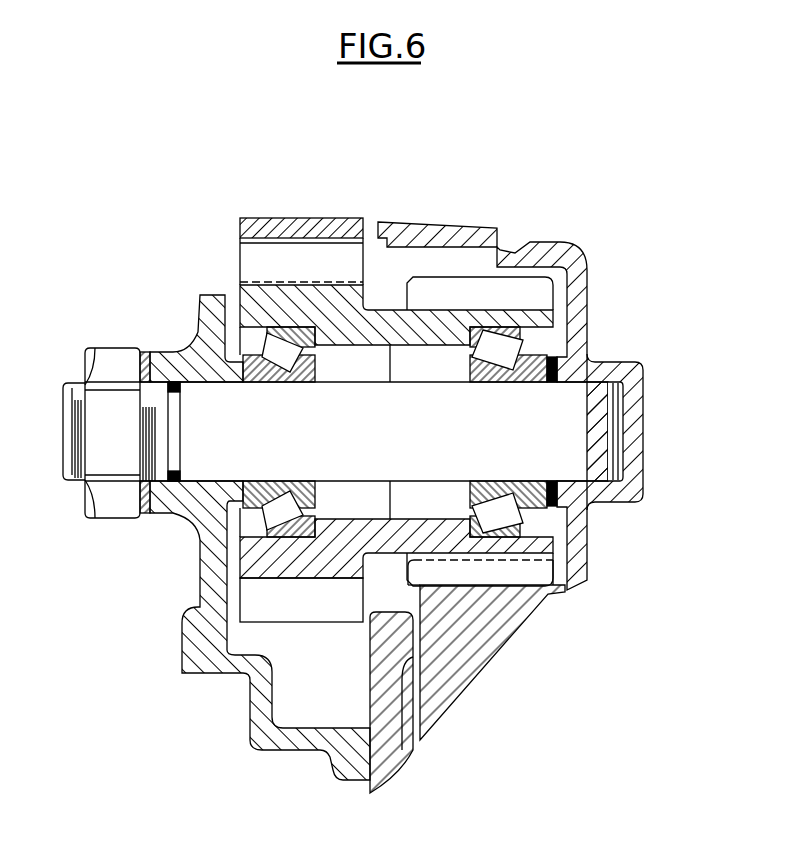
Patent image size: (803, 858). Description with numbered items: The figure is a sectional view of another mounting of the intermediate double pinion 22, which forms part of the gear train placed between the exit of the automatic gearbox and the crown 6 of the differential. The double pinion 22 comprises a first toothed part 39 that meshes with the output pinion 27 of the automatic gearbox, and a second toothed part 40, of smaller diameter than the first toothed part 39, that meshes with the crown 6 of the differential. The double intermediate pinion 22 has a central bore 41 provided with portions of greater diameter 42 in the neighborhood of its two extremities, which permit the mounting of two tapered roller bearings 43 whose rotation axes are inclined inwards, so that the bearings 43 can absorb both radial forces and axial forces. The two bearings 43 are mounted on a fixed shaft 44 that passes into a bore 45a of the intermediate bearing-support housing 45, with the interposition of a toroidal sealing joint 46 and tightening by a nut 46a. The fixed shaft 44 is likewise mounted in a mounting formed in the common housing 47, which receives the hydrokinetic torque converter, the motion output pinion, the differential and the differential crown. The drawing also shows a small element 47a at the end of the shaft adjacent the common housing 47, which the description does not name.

The crown 6 is at (497, 618).
The intermediate double pinion 22 is at (378, 328).
The output pinion 27 is at (302, 225).
The first toothed part 39 is at (262, 278).
The second toothed part 40 is at (453, 288).
The central bore 41 is at (392, 360).
The portions of greater diameter 42 is at (298, 328).
The tapered roller bearings 43 is at (265, 368).
The fixed shaft 44 is at (560, 434).
The intermediate bearing-support housing 45 is at (208, 630).
The bore 45a is at (185, 352).
The toroidal sealing joint 46 is at (170, 382).
The nut 46a is at (108, 365).
The common housing 47 is at (578, 304).
The seal cap 47a is at (612, 381).